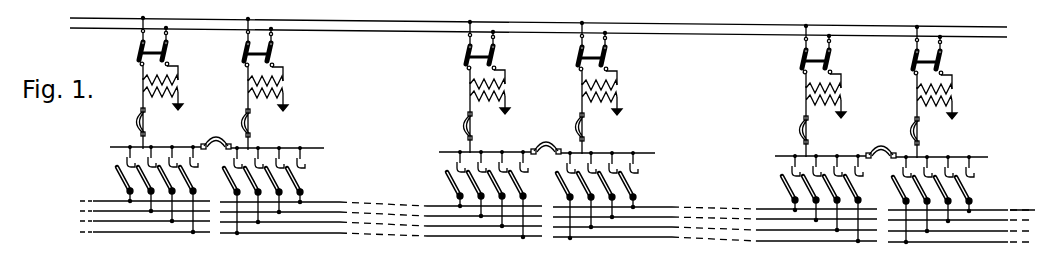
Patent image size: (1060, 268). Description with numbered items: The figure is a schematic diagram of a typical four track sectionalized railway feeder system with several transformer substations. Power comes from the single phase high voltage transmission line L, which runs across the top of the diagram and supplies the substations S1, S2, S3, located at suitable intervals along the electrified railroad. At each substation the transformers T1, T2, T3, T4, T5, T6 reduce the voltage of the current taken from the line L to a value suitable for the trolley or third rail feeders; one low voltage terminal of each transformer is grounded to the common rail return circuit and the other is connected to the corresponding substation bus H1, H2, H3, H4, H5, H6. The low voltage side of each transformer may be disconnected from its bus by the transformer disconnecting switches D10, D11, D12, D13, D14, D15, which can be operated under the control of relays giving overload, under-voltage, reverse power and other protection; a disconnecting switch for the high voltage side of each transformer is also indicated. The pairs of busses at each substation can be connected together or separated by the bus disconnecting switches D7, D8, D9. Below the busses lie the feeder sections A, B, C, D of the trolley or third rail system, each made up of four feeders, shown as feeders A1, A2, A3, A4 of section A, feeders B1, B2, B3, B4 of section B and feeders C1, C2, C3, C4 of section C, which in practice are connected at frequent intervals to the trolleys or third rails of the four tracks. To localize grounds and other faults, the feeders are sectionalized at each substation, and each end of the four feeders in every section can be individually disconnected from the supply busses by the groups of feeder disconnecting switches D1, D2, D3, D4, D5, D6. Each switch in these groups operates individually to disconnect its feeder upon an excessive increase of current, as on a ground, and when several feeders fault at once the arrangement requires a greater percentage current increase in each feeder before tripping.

The high voltage transmission line L is at (398, 31).
The substation S1 is at (211, 49).
The substation S2 is at (541, 53).
The substation S3 is at (877, 57).
The transformer T1 is at (143, 90).
The transformer T2 is at (284, 91).
The transformer T3 is at (470, 93).
The transformer T4 is at (617, 96).
The transformer T5 is at (806, 98).
The transformer T6 is at (952, 100).
The group of feeder disconnecting switches D1 is at (122, 184).
The group of feeder disconnecting switches D2 is at (301, 180).
The group of feeder disconnecting switches D3 is at (452, 185).
The group of feeder disconnecting switches D4 is at (631, 186).
The group of feeder disconnecting switches D5 is at (786, 192).
The group of feeder disconnecting switches D6 is at (962, 191).
The bus disconnecting switch D7 is at (216, 138).
The bus disconnecting switch D8 is at (546, 143).
The bus disconnecting switch D9 is at (881, 147).
The transformer disconnecting switch D10 is at (132, 120).
The transformer disconnecting switch D11 is at (252, 124).
The transformer disconnecting switch D12 is at (460, 127).
The transformer disconnecting switch D13 is at (586, 128).
The transformer disconnecting switch D14 is at (797, 131).
The transformer disconnecting switch D15 is at (921, 133).
The substation bus H1 is at (110, 147).
The substation bus H2 is at (324, 148).
The substation bus H3 is at (439, 152).
The substation bus H4 is at (650, 154).
The substation bus H5 is at (775, 156).
The substation bus H6 is at (985, 157).
The feeder section A is at (194, 207).
The feeder A1 is at (78, 201).
The feeder A2 is at (78, 211).
The feeder A3 is at (78, 221).
The feeder A4 is at (78, 232).
The feeder section B is at (506, 210).
The feeder B1 is at (379, 206).
The feeder B2 is at (403, 226).
The feeder B3 is at (418, 235).
The feeder B4 is at (423, 236).
The feeder section C is at (710, 213).
The feeder C1 is at (681, 207).
The feeder C2 is at (695, 218).
The feeder C3 is at (735, 229).
The feeder C4 is at (747, 240).
The feeder section D is at (1046, 247).